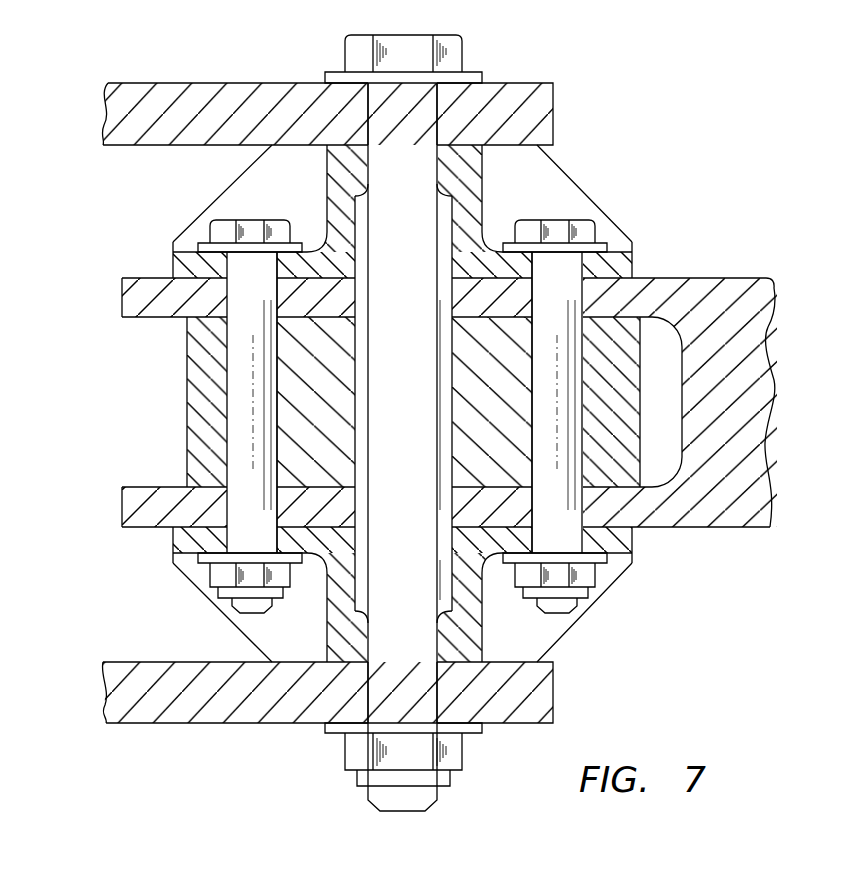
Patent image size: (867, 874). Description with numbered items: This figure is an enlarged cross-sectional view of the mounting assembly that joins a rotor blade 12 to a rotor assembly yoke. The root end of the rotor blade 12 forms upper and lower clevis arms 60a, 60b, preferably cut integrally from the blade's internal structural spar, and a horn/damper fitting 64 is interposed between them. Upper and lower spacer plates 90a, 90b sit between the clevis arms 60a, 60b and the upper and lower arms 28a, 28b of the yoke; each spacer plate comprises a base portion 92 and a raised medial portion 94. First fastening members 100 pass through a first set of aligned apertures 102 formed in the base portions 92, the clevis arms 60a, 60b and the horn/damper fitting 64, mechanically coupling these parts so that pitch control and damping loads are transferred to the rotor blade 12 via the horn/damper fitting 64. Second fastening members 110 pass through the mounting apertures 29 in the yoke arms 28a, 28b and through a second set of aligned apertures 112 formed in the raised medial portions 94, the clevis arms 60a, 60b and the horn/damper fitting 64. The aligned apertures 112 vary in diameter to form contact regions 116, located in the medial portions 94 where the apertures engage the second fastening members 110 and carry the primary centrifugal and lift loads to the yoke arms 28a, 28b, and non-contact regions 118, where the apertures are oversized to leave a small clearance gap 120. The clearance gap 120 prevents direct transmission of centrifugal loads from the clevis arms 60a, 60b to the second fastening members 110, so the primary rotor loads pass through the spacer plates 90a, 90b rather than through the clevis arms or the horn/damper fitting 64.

The rotor blade 12 is at (757, 387).
The upper arm 28a is at (172, 100).
The lower arm 28b is at (140, 716).
The mounting apertures 29 is at (355, 112).
The upper clevis arm 60a is at (130, 297).
The lower clevis arm 60b is at (130, 500).
The horn/damper fitting 64 is at (193, 447).
The upper spacer plate 90a is at (243, 200).
The lower spacer plate 90b is at (262, 627).
The base portion 92 is at (178, 263).
The raised medial portion 94 is at (338, 160).
The first fastening members 100 is at (238, 265).
The first set of aligned apertures 102 is at (222, 378).
The second fastening members 110 is at (422, 97).
The second set of aligned apertures 112 is at (460, 200).
The contact regions 116 is at (426, 145).
The non-contact regions 118 is at (426, 183).
The clearance gap 120 is at (447, 597).